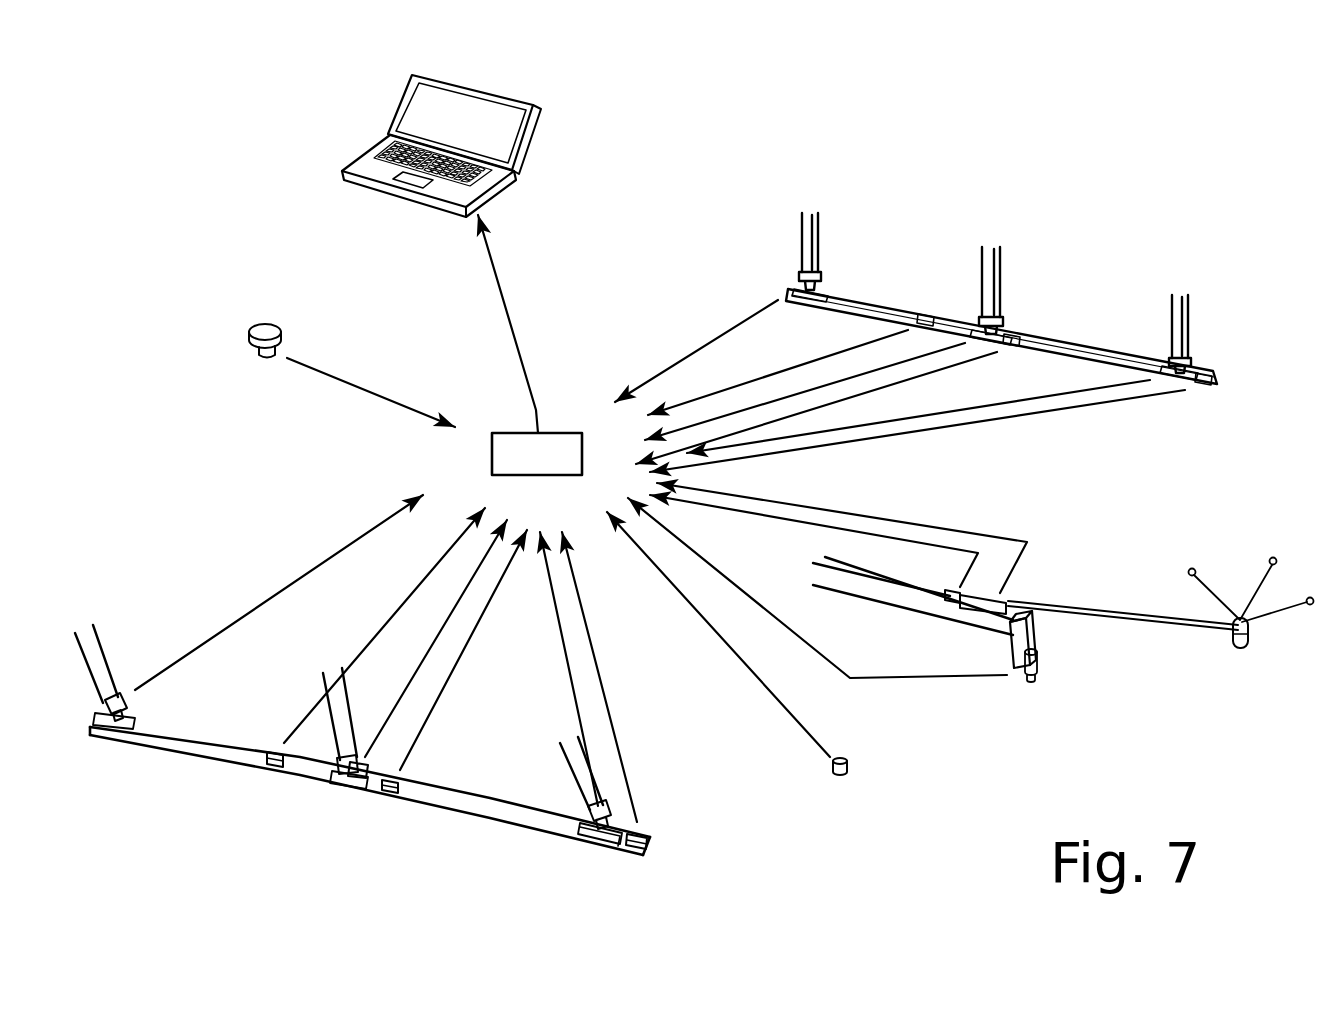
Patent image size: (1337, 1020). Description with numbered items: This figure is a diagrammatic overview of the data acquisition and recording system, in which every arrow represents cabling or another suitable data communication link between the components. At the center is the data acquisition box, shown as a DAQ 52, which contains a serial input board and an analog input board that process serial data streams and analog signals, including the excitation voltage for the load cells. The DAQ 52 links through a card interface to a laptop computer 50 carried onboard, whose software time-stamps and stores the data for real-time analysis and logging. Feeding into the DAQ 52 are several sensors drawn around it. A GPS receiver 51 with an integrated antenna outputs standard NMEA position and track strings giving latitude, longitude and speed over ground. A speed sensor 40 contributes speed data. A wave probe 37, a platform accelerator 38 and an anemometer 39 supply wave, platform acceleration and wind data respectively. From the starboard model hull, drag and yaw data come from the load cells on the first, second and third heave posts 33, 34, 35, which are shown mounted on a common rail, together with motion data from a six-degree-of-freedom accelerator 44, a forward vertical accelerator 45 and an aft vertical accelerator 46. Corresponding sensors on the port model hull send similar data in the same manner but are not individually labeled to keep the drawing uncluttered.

The first heave post 33 is at (565, 763).
The second heave post 34 is at (322, 691).
The third heave post 35 is at (100, 636).
The wave probe 37 is at (1036, 662).
The platform accelerator 38 is at (963, 588).
The anemometer 39 is at (1248, 640).
The speed sensor 40 is at (850, 768).
The 6-DOF accelerator 44 is at (387, 794).
The forward vertical accelerator 45 is at (648, 838).
The aft vertical accelerator 46 is at (269, 768).
The laptop computer 50 is at (426, 73).
The GPS receiver 51 is at (258, 326).
The DAQ 52 is at (492, 457).